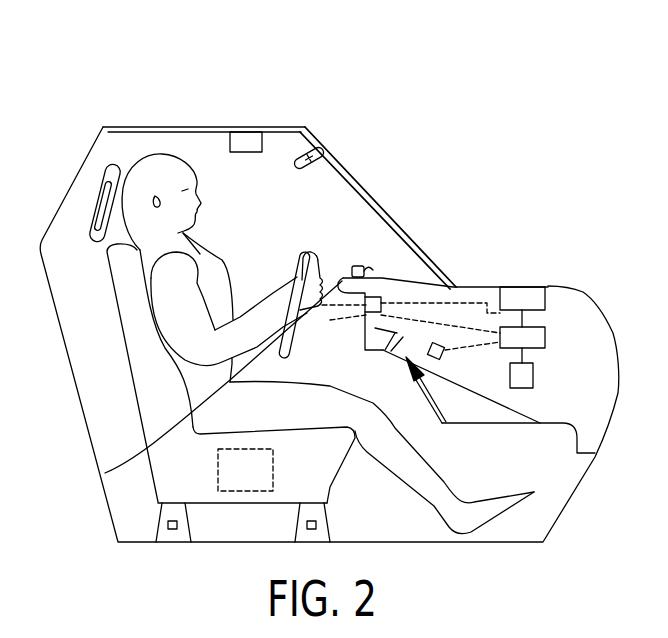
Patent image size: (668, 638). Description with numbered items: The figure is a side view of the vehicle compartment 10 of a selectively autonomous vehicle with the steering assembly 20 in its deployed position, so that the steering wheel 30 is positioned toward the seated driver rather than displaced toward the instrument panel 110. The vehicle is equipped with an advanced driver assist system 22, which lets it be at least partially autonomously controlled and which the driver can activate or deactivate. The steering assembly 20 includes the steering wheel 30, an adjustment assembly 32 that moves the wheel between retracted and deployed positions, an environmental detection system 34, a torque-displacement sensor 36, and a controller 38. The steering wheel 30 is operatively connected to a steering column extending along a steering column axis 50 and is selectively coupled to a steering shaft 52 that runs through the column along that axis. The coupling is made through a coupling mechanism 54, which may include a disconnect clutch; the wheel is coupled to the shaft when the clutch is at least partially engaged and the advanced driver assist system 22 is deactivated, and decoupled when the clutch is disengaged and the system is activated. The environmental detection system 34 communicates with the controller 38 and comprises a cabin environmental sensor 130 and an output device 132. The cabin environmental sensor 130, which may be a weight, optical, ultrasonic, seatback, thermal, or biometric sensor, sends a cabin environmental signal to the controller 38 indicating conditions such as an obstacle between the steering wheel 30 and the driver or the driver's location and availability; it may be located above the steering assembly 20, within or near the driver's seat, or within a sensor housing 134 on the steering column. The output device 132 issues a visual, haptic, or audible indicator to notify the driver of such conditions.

The vehicle compartment 10 is at (292, 96).
The steering assembly 20 is at (264, 278).
The advanced driver assist system (ADAS) 22 is at (546, 295).
The steering wheel 30 is at (105, 473).
The adjustment assembly 32 is at (415, 282).
The environmental detection system 34 is at (534, 376).
The torque-displacement sensor 36 is at (436, 342).
The controller 38 is at (546, 338).
The steering column axis 50 is at (334, 328).
The steering shaft 52 is at (503, 408).
The coupling mechanism 54 is at (441, 424).
The instrument panel 110 is at (308, 255).
The cabin environmental sensor 130 is at (302, 158).
The output device 132 is at (237, 153).
The sensor housing 134 is at (367, 268).